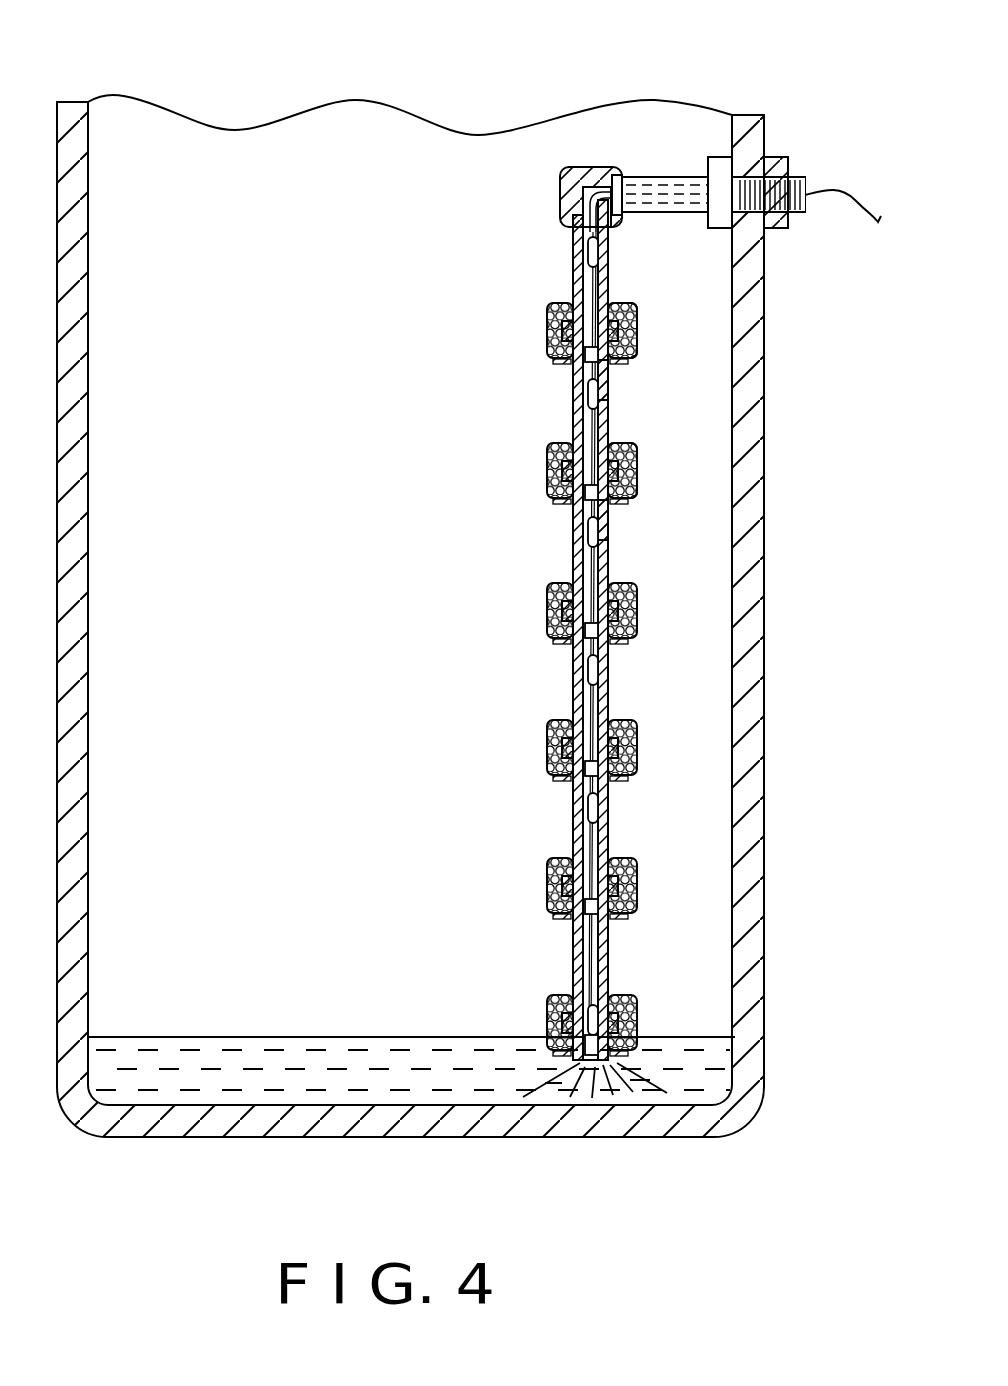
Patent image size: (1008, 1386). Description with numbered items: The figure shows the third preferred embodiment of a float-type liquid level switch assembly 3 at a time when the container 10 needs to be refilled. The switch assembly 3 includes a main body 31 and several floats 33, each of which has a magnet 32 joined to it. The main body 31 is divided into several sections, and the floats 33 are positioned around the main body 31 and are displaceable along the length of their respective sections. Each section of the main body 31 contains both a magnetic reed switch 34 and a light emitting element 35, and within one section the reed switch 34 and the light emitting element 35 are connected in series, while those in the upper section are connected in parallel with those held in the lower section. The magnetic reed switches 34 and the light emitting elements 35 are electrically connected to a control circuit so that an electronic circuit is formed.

The float-type liquid level switch assembly 3 is at (548, 240).
The container 10 is at (765, 828).
The main body 31 is at (442, 975).
The magnet 32 is at (633, 332).
The floats 33 is at (627, 290).
The magnetic reed switch 34 is at (598, 248).
The light emitting element 35 is at (607, 383).